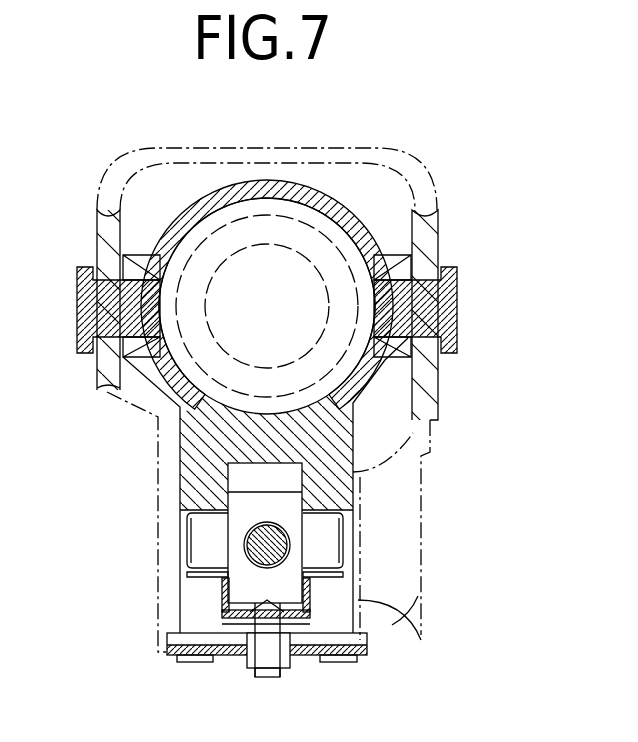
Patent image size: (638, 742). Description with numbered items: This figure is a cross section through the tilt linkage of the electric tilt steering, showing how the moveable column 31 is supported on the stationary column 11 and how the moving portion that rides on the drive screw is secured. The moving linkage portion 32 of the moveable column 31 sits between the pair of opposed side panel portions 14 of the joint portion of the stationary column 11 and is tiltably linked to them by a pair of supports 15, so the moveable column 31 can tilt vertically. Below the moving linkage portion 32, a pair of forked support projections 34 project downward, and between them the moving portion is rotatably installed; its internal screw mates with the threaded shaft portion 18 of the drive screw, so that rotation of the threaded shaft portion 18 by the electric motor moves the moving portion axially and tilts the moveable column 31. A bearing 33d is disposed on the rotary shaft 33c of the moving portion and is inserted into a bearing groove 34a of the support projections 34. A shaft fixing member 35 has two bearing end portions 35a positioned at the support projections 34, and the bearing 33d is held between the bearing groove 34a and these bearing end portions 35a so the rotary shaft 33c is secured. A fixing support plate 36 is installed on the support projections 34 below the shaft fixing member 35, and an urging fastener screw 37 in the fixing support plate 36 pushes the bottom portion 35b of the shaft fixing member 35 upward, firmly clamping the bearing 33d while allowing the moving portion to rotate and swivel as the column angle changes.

The stationary column 11 is at (409, 163).
The side panel portions 14 is at (440, 222).
The supports 15 is at (447, 308).
The threaded shaft portion 18 is at (281, 562).
The moveable column 31 is at (273, 166).
The moving linkage portion 32 is at (189, 198).
The rotary shaft 33c is at (330, 548).
The bearing 33d is at (210, 518).
The support projections 34 is at (345, 598).
The bearing groove 34a is at (345, 622).
The shaft fixing member 35 is at (218, 595).
The bearing end portions 35a is at (338, 626).
The bottom portion 35b is at (222, 624).
The fixing support plate 36 is at (366, 660).
The urging fastener screw 37 is at (268, 680).